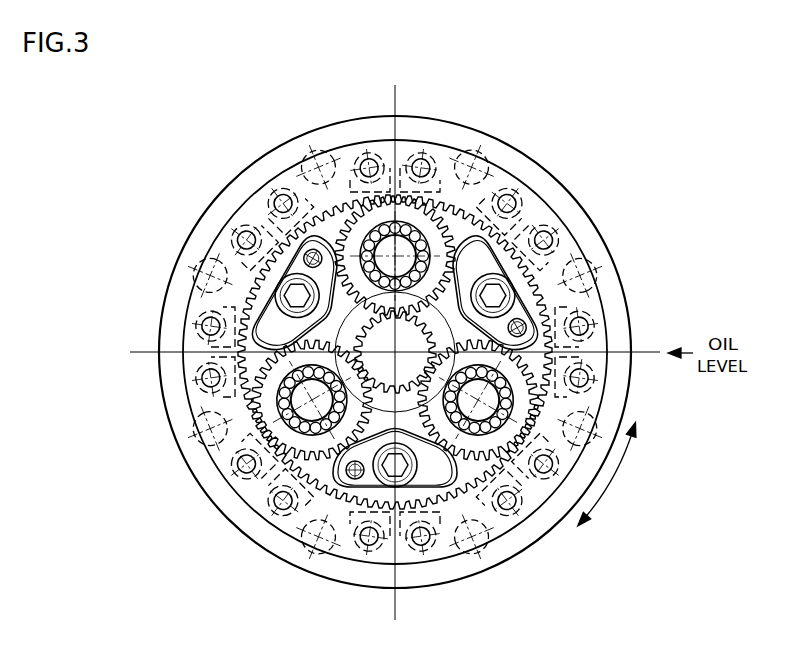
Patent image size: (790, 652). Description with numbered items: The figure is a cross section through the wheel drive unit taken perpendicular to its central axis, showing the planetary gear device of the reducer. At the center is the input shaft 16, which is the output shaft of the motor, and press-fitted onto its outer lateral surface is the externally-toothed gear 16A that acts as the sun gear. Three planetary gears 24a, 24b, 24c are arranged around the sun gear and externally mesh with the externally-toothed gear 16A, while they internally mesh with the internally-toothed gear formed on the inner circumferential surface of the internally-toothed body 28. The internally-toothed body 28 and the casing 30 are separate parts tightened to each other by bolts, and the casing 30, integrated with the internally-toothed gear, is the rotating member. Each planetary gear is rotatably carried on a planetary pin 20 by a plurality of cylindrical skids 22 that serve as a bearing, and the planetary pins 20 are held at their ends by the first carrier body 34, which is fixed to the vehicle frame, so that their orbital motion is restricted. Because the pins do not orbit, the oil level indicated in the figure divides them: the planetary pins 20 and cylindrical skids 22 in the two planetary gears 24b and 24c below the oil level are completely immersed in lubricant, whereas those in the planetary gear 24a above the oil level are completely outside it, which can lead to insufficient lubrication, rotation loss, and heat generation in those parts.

The input shaft 16 is at (383, 362).
The externally-toothed gear 16A is at (368, 331).
The planetary pin 20 is at (337, 274).
The cylindrical skid 22 is at (363, 247).
The planetary gear 24a is at (358, 204).
The planetary gear 24b is at (333, 478).
The planetary gear 24c is at (503, 437).
The internally-toothed body 28 is at (440, 213).
The casing 30 is at (423, 130).
The first carrier body 34 is at (432, 478).